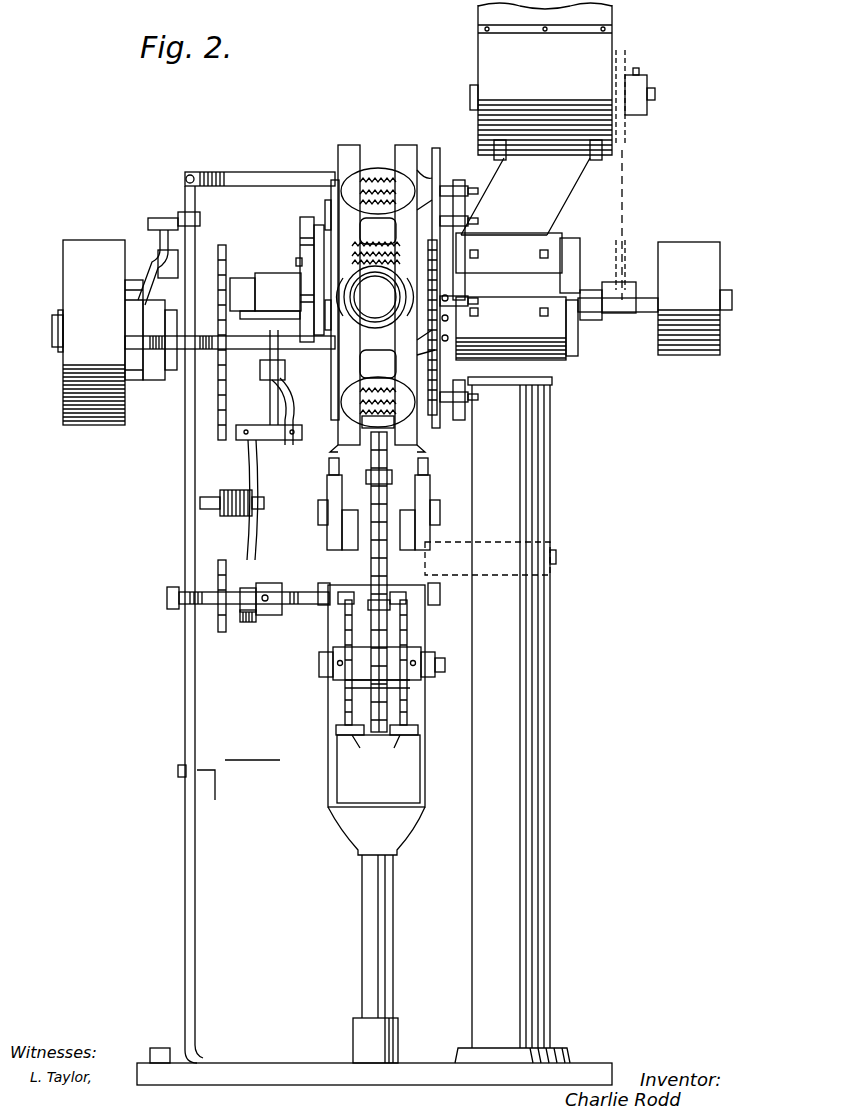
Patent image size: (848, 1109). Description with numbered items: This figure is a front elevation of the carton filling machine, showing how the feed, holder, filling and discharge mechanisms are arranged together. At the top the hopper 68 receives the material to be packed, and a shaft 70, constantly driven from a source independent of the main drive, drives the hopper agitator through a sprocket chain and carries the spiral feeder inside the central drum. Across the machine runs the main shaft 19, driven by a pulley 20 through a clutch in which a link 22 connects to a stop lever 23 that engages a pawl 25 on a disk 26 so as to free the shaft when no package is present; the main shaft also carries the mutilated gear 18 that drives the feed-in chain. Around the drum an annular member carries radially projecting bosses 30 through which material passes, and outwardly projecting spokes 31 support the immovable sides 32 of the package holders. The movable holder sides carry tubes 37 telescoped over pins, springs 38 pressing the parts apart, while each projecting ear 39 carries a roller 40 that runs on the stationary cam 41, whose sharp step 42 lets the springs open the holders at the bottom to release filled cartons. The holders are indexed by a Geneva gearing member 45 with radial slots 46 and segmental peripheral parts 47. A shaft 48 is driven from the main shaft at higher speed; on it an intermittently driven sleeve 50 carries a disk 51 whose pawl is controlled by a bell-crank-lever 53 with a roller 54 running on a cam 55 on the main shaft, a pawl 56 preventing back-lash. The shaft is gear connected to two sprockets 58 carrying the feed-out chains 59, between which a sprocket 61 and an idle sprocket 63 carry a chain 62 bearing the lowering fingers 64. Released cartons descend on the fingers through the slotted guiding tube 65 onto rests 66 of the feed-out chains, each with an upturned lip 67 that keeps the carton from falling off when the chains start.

The mutilated gear 18 is at (290, 380).
The main shaft 19 is at (52, 335).
The pulley 20 is at (94, 332).
The link 22 is at (262, 178).
The stop lever 23 is at (140, 262).
The pawl 25 is at (125, 292).
The disk 26 is at (143, 385).
The radially projecting bosses 30 is at (375, 298).
The outwardly projecting spokes 31 is at (332, 205).
The immovable sides of the package holder 32 is at (340, 170).
The tubes 37 is at (383, 178).
The springs 38 is at (378, 188).
The projecting ear 39 is at (417, 180).
The roller 40 is at (436, 178).
The cam 41 is at (440, 178).
The sharp step 42 is at (434, 415).
The Geneva gearing member 45 is at (300, 228).
The radial slots 46 is at (303, 245).
The segmental peripheral parts 47 is at (308, 270).
The shaft 48 is at (167, 598).
The intermittently driven sleeve 50 is at (262, 580).
The disk 51 is at (258, 530).
The bell-crank-lever 53 is at (270, 440).
The roller 54 is at (268, 385).
The cam 55 is at (265, 362).
The pawl 56 is at (262, 513).
The sprockets 58 is at (345, 706).
The feed-out chains 59 is at (379, 736).
The sprocket 61 is at (385, 680).
The chain 62 is at (421, 640).
The idle sprocket 63 is at (385, 472).
The lowering fingers 64 is at (382, 420).
The guiding tube 65 is at (328, 488).
The rests 66 is at (338, 730).
The upturned lip 67 is at (352, 596).
The hopper 68 is at (541, 81).
The shaft 70 is at (664, 300).